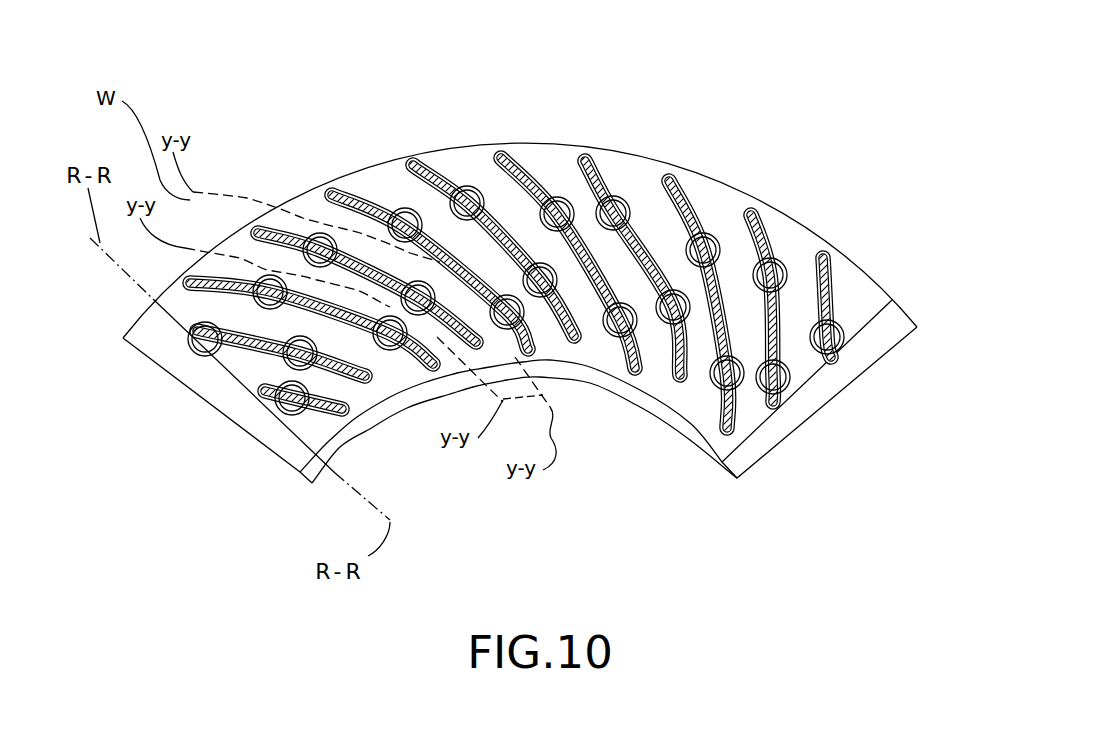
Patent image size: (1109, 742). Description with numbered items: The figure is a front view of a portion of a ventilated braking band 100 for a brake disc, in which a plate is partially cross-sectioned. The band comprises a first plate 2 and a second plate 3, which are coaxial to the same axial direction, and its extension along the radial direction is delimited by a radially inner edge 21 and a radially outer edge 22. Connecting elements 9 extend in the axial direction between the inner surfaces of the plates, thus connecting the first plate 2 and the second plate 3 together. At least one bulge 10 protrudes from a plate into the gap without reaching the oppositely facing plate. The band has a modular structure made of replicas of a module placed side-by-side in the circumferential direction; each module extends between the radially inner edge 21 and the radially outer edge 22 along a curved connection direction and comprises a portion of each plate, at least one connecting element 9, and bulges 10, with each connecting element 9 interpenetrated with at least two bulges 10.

The ventilated braking band 100 is at (920, 141).
The first plate 2 is at (773, 203).
The radially outer edge 22 is at (545, 140).
The radially inner edge 21 is at (698, 437).
The second plate 3 is at (287, 443).
The bulge 10 is at (320, 228).
The connecting element 9 is at (270, 232).